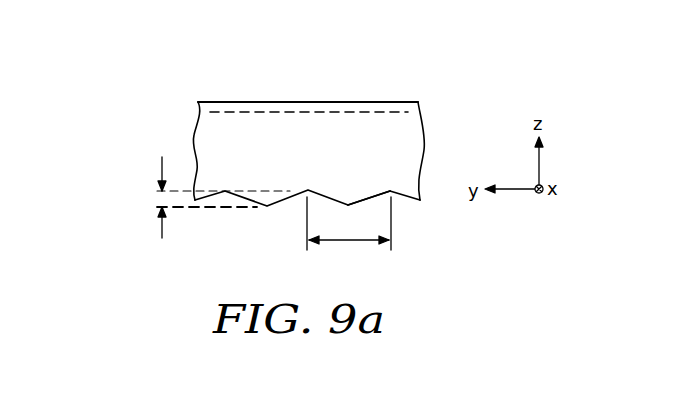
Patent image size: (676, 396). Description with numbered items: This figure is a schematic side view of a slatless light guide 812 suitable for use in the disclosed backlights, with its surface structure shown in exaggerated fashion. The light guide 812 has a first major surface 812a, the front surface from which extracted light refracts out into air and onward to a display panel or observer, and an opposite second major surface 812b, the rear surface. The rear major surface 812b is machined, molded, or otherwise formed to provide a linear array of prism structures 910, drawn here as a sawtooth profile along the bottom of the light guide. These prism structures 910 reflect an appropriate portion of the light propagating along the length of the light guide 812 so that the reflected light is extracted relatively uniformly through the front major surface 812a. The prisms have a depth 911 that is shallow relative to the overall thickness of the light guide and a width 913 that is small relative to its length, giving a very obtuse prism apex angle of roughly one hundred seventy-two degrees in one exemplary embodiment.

The slatless light guide 812 is at (282, 164).
The first major surface 812a is at (363, 98).
The second major surface 812b is at (338, 236).
The prism structures 910 is at (394, 236).
The depth 911 is at (213, 211).
The width 913 is at (348, 241).